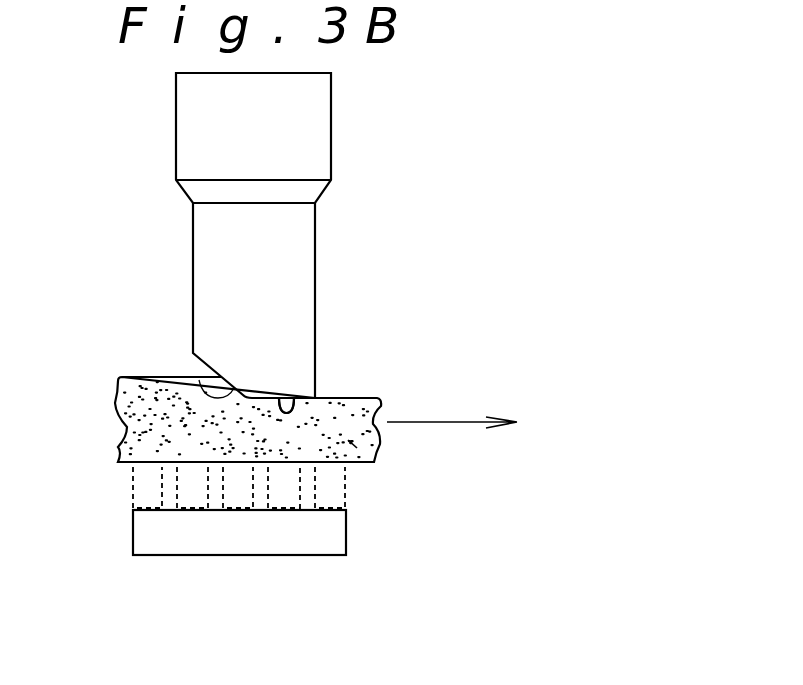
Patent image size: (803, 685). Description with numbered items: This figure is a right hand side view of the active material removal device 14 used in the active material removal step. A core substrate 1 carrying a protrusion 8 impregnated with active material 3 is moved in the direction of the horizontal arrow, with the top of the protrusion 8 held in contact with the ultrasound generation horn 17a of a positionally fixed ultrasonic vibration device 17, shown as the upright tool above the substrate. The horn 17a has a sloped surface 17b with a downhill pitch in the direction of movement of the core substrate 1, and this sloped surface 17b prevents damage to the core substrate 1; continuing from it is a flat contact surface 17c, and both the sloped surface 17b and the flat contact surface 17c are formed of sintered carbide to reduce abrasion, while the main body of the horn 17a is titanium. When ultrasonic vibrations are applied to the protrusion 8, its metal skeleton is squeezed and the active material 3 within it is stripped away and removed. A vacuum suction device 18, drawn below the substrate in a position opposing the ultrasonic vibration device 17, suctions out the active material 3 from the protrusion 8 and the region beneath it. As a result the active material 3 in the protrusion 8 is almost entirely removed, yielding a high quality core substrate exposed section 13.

The core substrate 1 is at (373, 468).
The active material 3 is at (152, 443).
The protrusion 8 is at (155, 388).
The core substrate exposed section 13 is at (355, 399).
The active material removal device 14 is at (283, 243).
The ultrasonic vibration device 17 is at (315, 242).
The ultrasound generation horn 17a is at (280, 351).
The sloped surface 17b is at (199, 380).
The flat contact surface 17c is at (279, 396).
The vacuum suction device 18 is at (260, 555).